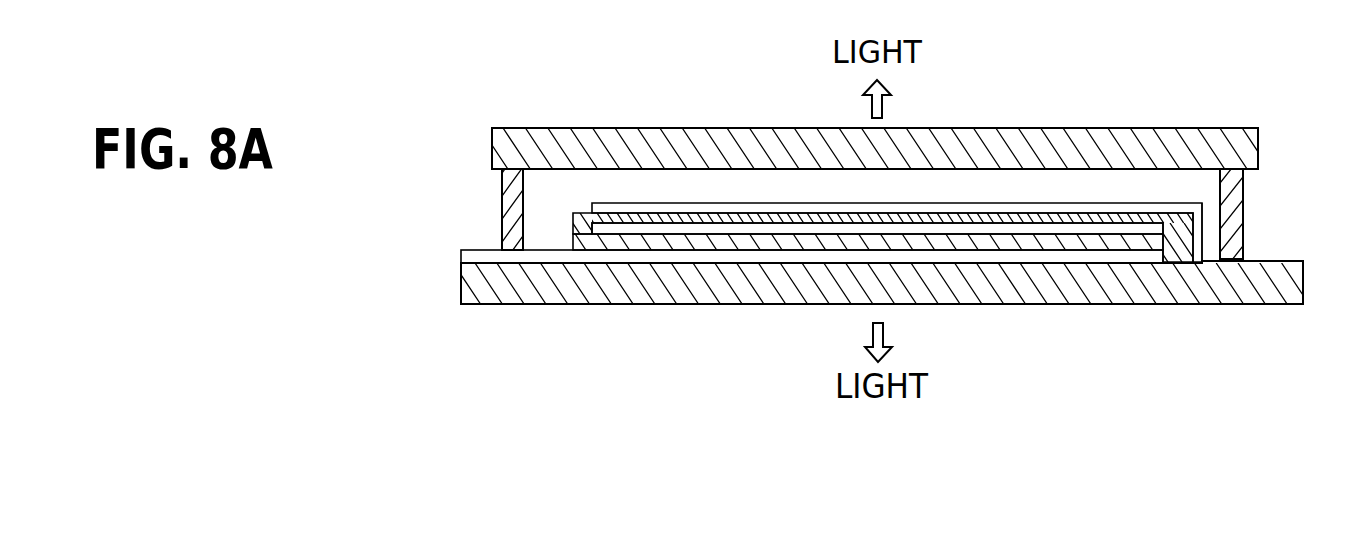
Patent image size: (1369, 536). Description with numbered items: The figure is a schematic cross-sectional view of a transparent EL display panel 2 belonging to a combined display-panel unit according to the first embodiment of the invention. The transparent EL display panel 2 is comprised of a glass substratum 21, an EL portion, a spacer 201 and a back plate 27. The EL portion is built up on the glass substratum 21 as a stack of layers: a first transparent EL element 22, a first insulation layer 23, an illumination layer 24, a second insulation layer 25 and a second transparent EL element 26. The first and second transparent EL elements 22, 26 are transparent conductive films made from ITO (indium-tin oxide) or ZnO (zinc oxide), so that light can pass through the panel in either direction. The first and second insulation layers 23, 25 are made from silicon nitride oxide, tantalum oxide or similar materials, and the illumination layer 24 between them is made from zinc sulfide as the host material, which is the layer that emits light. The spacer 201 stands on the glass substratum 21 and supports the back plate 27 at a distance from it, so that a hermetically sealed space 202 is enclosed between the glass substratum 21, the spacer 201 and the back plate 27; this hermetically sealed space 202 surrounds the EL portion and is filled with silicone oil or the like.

The transparent EL display panel 2 is at (1110, 111).
The glass substratum 21 is at (495, 295).
The first transparent EL element 22 is at (478, 257).
The first insulation layer 23 is at (612, 240).
The illumination layer 24 is at (683, 230).
The second insulation layer 25 is at (737, 218).
The second transparent EL element 26 is at (640, 208).
The back plate 27 is at (583, 152).
The spacer 201 is at (1235, 228).
The hermetically sealed space 202 is at (1197, 188).